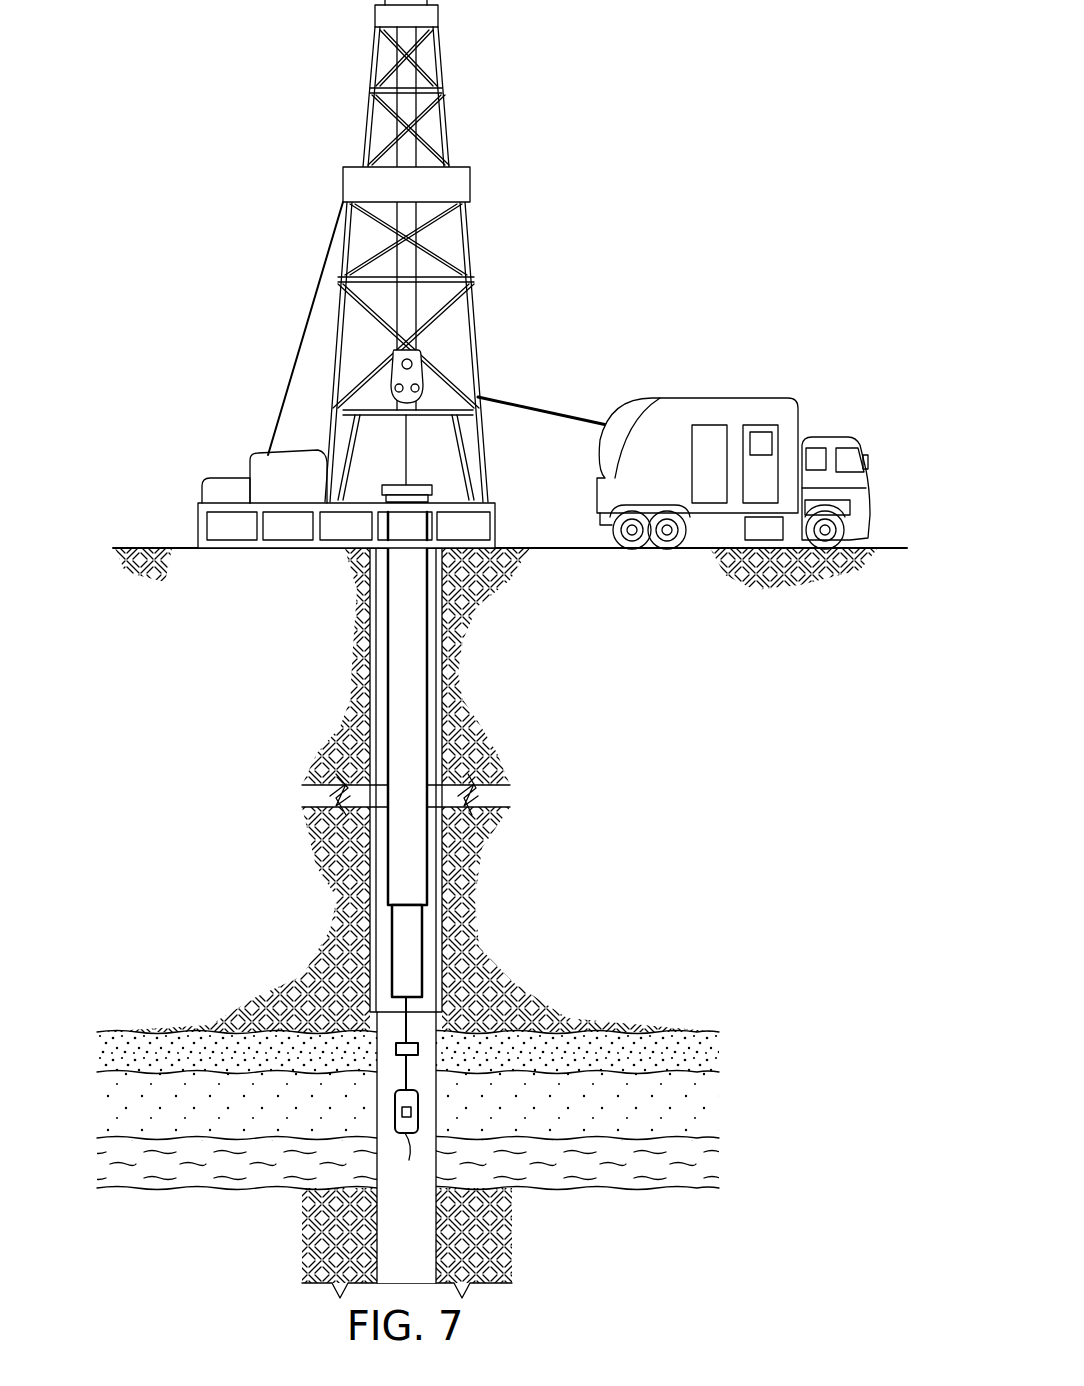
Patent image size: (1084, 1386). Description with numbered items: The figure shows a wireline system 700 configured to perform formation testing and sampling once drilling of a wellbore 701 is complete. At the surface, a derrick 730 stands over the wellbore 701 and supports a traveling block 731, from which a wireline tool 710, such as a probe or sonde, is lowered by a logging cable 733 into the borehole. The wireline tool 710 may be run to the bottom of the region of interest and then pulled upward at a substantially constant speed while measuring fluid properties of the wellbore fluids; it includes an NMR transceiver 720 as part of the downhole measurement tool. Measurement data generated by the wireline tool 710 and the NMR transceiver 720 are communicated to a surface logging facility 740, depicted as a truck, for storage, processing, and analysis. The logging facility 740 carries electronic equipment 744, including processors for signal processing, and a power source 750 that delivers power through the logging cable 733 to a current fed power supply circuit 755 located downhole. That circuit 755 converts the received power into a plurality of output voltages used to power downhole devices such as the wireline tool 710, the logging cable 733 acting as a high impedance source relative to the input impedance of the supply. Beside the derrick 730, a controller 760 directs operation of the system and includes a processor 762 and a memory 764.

The wireline system 700 is at (252, 116).
The wellbore 701 is at (380, 1225).
The wireline tool 710 is at (420, 1110).
The NMR transceiver 720 is at (408, 1161).
The derrick 730 is at (439, 251).
The traveling block 731 is at (422, 375).
The logging cable 733 is at (540, 404).
The surface logging facility 740 is at (733, 445).
The electronic equipment 744 is at (762, 432).
The power source 750 is at (710, 425).
The current fed power supply circuit 755 is at (420, 1050).
The controller 760 is at (341, 580).
The processor 762 is at (225, 533).
The memory 764 is at (295, 559).